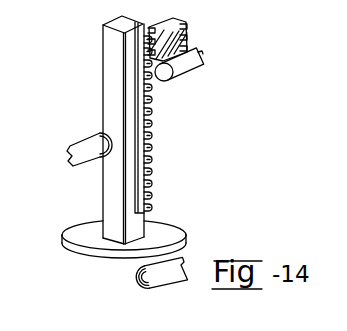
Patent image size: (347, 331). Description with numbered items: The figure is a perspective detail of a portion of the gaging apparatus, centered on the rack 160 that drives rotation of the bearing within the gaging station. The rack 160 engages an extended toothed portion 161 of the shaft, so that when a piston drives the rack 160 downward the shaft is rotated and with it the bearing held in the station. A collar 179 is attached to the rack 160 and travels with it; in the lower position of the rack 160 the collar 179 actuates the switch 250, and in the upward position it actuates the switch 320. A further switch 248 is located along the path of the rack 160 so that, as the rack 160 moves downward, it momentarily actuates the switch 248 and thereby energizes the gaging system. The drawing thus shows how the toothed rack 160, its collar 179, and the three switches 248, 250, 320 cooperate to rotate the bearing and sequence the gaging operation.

The rack 160 is at (146, 124).
The extended toothed portion 161 is at (181, 28).
The switch 320 is at (179, 64).
The switch 248 is at (83, 152).
The collar 179 is at (168, 235).
The switch 250 is at (166, 268).